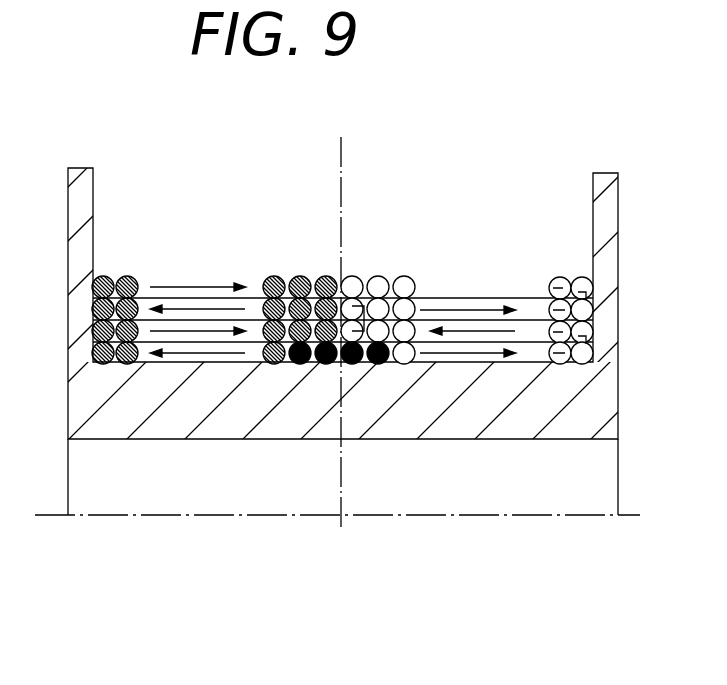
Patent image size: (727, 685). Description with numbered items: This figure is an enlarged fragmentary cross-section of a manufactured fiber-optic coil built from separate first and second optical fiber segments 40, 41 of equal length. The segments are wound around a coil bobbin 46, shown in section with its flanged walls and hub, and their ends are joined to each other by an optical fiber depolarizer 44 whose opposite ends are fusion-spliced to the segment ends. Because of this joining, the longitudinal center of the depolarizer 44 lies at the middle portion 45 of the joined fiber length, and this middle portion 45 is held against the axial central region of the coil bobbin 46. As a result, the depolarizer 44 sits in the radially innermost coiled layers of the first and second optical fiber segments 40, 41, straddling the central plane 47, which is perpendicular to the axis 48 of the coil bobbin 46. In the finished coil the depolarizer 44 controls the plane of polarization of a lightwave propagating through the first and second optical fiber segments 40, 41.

The first optical fiber segment 40 is at (127, 276).
The second optical fiber segment 41 is at (560, 277).
The optical fiber depolarizer 44 is at (390, 330).
The middle portion 45 is at (342, 366).
The coil bobbin 46 is at (618, 425).
The central plane 47 is at (341, 226).
The axis 48 is at (565, 518).